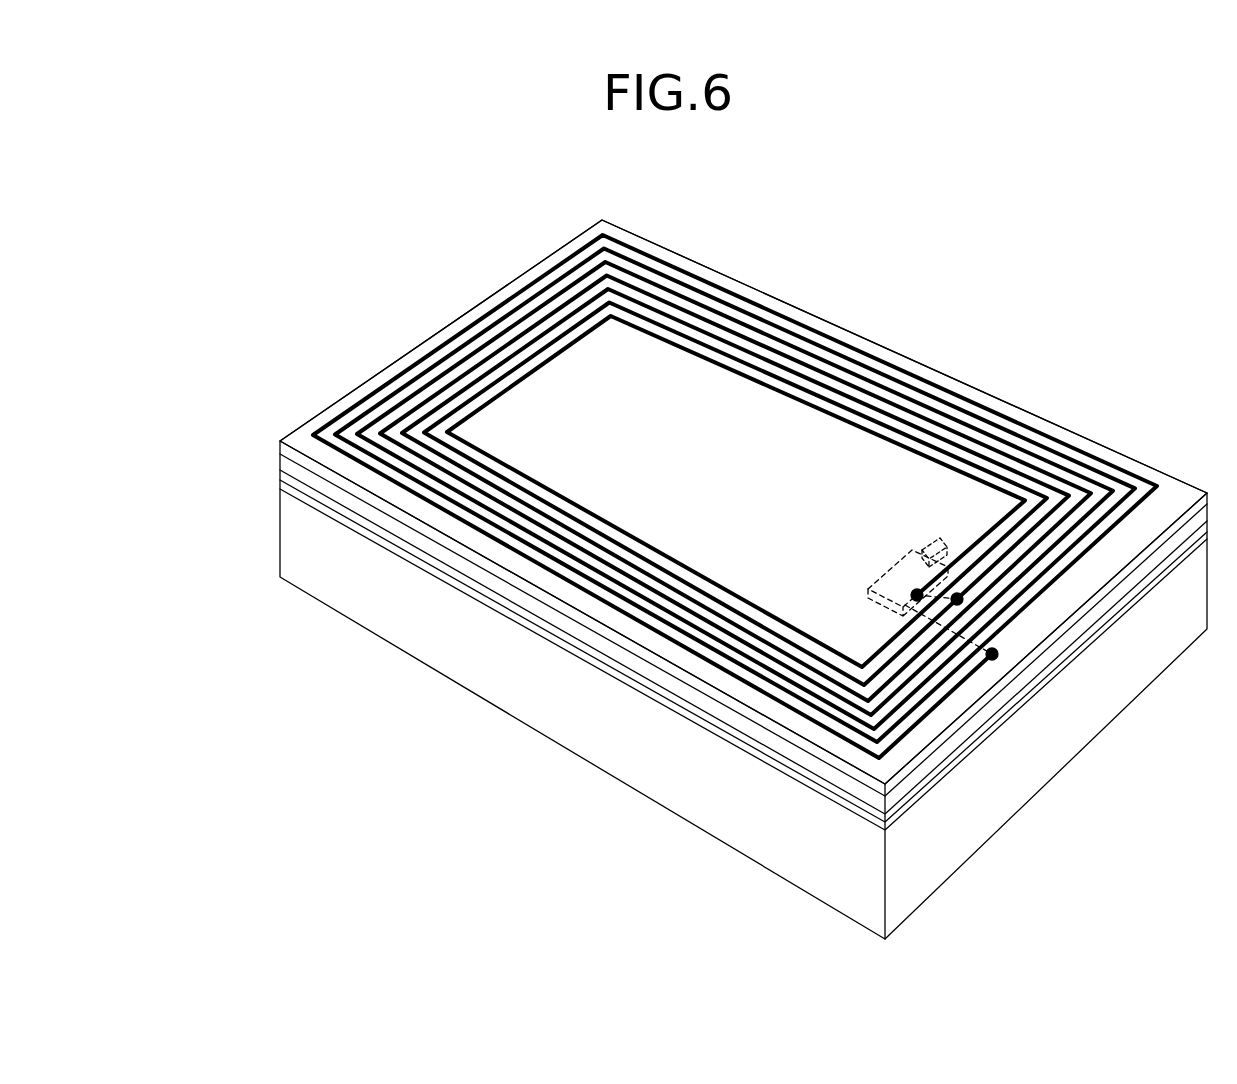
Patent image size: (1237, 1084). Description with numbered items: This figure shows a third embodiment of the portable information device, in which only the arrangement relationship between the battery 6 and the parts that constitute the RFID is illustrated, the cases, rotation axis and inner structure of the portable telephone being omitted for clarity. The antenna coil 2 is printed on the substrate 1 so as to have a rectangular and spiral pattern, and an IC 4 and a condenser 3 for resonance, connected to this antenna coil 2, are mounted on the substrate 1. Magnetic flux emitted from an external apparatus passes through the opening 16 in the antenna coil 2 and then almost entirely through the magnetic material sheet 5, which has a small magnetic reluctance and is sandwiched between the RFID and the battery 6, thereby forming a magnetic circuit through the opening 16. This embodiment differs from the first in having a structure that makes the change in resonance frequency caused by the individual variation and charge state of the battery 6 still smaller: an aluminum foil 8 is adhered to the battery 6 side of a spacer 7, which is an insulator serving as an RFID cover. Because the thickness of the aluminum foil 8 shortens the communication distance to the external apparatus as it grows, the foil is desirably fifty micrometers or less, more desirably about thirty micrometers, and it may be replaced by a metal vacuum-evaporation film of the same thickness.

The substrate 1 is at (935, 372).
The antenna coil 2 is at (468, 332).
The condenser 3 is at (868, 580).
The IC 4 is at (925, 540).
The magnetic material sheet 5 is at (290, 462).
The battery 6 is at (925, 848).
The spacer 7 is at (960, 745).
The aluminum foil 8 is at (310, 497).
The opening 16 is at (655, 395).